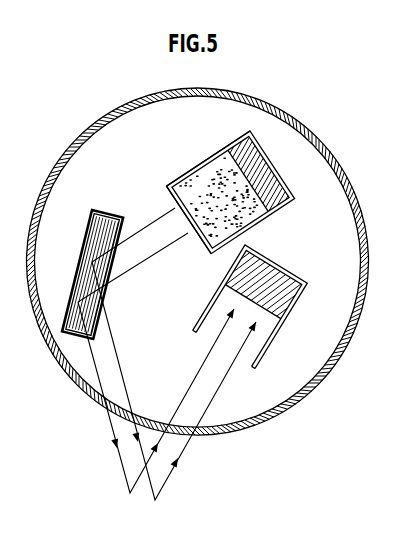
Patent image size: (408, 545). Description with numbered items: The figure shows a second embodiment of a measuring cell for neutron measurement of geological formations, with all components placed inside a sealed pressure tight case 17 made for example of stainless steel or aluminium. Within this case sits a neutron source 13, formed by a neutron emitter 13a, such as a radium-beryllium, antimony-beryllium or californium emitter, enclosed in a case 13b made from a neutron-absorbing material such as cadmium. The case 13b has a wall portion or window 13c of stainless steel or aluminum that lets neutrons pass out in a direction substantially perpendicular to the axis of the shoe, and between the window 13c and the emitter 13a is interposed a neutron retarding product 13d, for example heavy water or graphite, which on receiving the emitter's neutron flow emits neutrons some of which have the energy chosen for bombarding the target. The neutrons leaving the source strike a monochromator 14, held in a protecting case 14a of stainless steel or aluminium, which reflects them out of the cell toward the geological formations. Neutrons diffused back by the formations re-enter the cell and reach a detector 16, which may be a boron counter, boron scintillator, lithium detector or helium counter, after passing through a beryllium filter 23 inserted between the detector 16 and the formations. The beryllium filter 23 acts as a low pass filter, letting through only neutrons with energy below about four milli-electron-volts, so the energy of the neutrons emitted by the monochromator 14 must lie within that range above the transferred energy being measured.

The neutron source 13 is at (237, 154).
The neutron emitter 13a is at (246, 156).
The case 13b is at (197, 167).
The window 13c is at (170, 209).
The neutron retarding product 13d is at (237, 216).
The monochromator 14 is at (84, 268).
The protecting case 14a is at (94, 210).
The detector 16 is at (268, 305).
The sealed pressure tight case 17 is at (328, 155).
The beryllium filter 23 is at (273, 307).